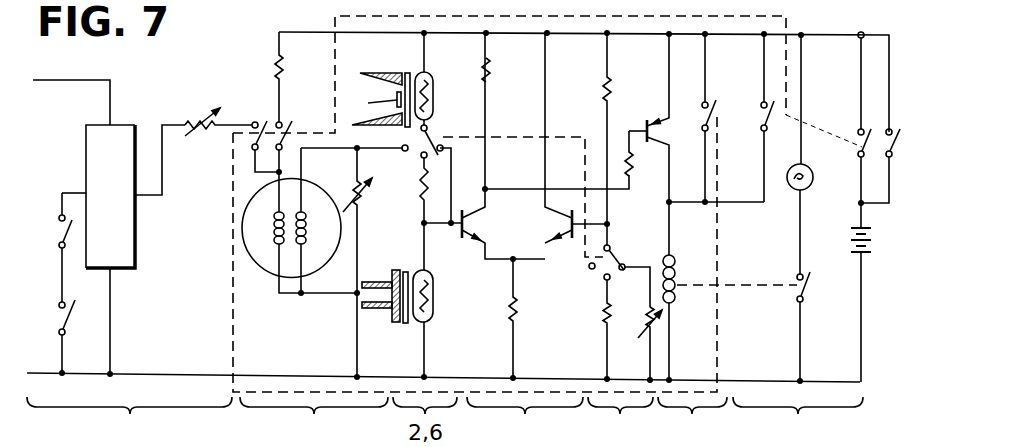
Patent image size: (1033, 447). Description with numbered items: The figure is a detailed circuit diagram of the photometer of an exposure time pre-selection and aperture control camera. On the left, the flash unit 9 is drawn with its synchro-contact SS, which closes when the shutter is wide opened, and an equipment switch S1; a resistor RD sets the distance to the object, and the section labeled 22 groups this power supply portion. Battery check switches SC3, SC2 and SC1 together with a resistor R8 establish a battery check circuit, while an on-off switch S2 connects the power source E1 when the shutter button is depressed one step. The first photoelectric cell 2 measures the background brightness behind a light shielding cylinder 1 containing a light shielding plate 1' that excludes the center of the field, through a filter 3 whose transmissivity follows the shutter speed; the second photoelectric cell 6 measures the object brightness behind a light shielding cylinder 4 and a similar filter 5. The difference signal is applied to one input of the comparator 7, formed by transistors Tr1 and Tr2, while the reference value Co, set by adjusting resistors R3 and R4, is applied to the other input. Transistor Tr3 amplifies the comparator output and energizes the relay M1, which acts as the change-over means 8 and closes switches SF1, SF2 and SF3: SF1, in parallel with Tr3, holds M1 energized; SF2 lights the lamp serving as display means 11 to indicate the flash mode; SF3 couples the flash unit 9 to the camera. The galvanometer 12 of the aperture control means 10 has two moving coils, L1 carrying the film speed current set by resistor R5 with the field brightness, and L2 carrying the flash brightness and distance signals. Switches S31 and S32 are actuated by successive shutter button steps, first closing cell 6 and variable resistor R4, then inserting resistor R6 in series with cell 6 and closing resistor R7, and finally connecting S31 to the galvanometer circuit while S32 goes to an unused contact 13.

The light shielding cylinder 1 is at (377, 79).
The light shielding plate 1' is at (378, 98).
The first photoelectric cell 2 is at (433, 79).
The filter 3 is at (408, 72).
The light shielding cylinder 4 is at (375, 281).
The filter 5 is at (405, 271).
The second photoelectric cell 6 is at (431, 276).
The comparator 7 is at (525, 421).
The change-over means 8 is at (692, 420).
The flash unit 9 is at (100, 148).
The aperture control means 10 is at (314, 421).
The display means (lamp) 11 is at (812, 178).
The galvanometer 12 is at (327, 193).
The contact 13 is at (589, 266).
The power supply section 22 is at (194, 433).
The reference value Co is at (620, 421).
The resistor R3 is at (591, 139).
The variable resistor R4 is at (638, 342).
The resistor R5 is at (367, 262).
The resistor R6 is at (409, 211).
The resistor R7 is at (591, 329).
The resistor R8 is at (296, 77).
The resistor RD is at (204, 118).
The equipment switch S1 is at (58, 233).
The on-off switch S2 is at (893, 153).
The synchro-contact SS is at (60, 316).
The switch S31 is at (434, 129).
The switch S32 is at (614, 248).
The switch SF1 is at (713, 103).
The switch SF2 is at (806, 294).
The switch SF3 is at (250, 140).
The switch SC1 is at (858, 145).
The switch SC2 is at (769, 117).
The switch SC3 is at (261, 143).
The transistor Tr1 is at (503, 146).
The transistor Tr2 is at (563, 138).
The transistor Tr3 is at (664, 144).
The moving coil L1 is at (328, 222).
The moving coil L2 is at (304, 252).
The relay M1 is at (686, 317).
The power source E1 is at (876, 305).